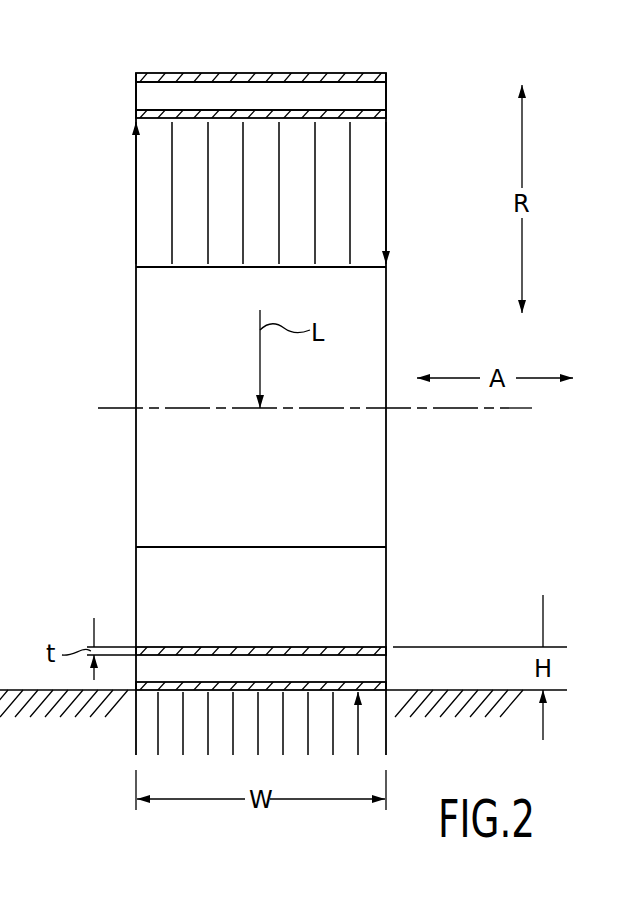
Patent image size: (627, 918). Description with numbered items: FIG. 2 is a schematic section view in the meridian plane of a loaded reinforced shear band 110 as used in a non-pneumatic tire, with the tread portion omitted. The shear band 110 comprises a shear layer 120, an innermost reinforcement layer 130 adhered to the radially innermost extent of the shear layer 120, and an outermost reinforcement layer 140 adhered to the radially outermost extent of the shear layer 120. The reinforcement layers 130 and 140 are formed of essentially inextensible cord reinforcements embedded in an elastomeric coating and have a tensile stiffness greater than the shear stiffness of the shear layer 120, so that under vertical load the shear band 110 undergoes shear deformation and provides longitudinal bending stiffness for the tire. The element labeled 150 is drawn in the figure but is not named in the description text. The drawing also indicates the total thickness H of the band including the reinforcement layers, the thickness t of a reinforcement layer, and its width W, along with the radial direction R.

The reinforced shear band 110 is at (265, 110).
The shear layer 120 is at (365, 95).
The innermost reinforcement layer 130 is at (362, 119).
The outermost reinforcement layer 140 is at (380, 73).
The main body 150 is at (386, 210).